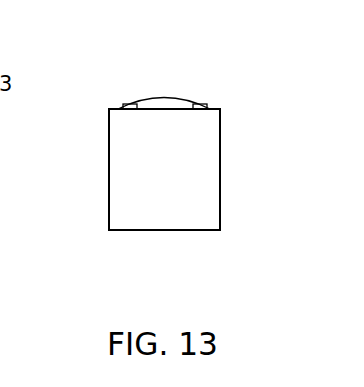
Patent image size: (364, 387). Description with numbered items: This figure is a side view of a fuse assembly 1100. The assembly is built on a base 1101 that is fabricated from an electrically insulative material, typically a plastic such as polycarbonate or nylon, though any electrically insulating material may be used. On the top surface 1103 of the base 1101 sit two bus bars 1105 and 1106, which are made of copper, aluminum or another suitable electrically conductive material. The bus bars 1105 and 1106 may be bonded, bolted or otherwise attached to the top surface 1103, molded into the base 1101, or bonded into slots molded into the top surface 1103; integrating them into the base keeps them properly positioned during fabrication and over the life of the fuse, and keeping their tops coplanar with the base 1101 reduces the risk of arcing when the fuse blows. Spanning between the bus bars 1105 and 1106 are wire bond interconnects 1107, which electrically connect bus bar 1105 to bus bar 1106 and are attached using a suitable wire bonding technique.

The fuse assembly 1100 is at (116, 129).
The base 1101 is at (190, 176).
The top surface 1103 is at (220, 100).
The bus bar 1105 is at (200, 110).
The bus bar 1106 is at (128, 110).
The wire bond interconnects 1107 is at (165, 88).